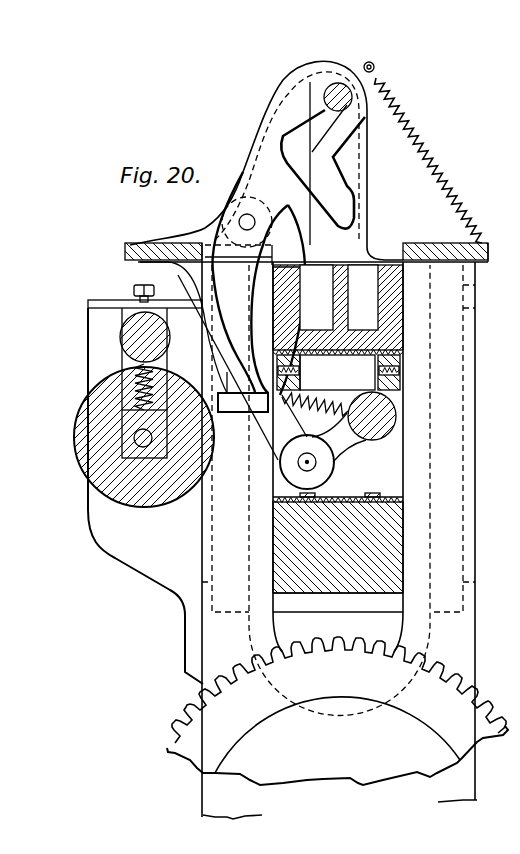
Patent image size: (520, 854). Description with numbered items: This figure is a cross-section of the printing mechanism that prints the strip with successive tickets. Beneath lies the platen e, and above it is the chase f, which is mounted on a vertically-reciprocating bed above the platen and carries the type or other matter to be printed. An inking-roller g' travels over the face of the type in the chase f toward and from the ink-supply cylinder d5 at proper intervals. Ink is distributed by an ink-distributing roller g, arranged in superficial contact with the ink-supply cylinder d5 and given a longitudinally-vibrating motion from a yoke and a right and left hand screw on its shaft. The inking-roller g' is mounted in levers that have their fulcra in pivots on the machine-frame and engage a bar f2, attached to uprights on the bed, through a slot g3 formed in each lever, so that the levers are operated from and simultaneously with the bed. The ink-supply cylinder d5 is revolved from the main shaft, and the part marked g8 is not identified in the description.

The bar f2 is at (337, 83).
The slot g3 is at (323, 169).
The ink-distributing roller g is at (135, 337).
The ink-supply cylinder d5 is at (74, 436).
The connecting link g8 is at (228, 367).
The chase f is at (337, 372).
The inking-roller g' is at (384, 416).
The platen e is at (338, 536).